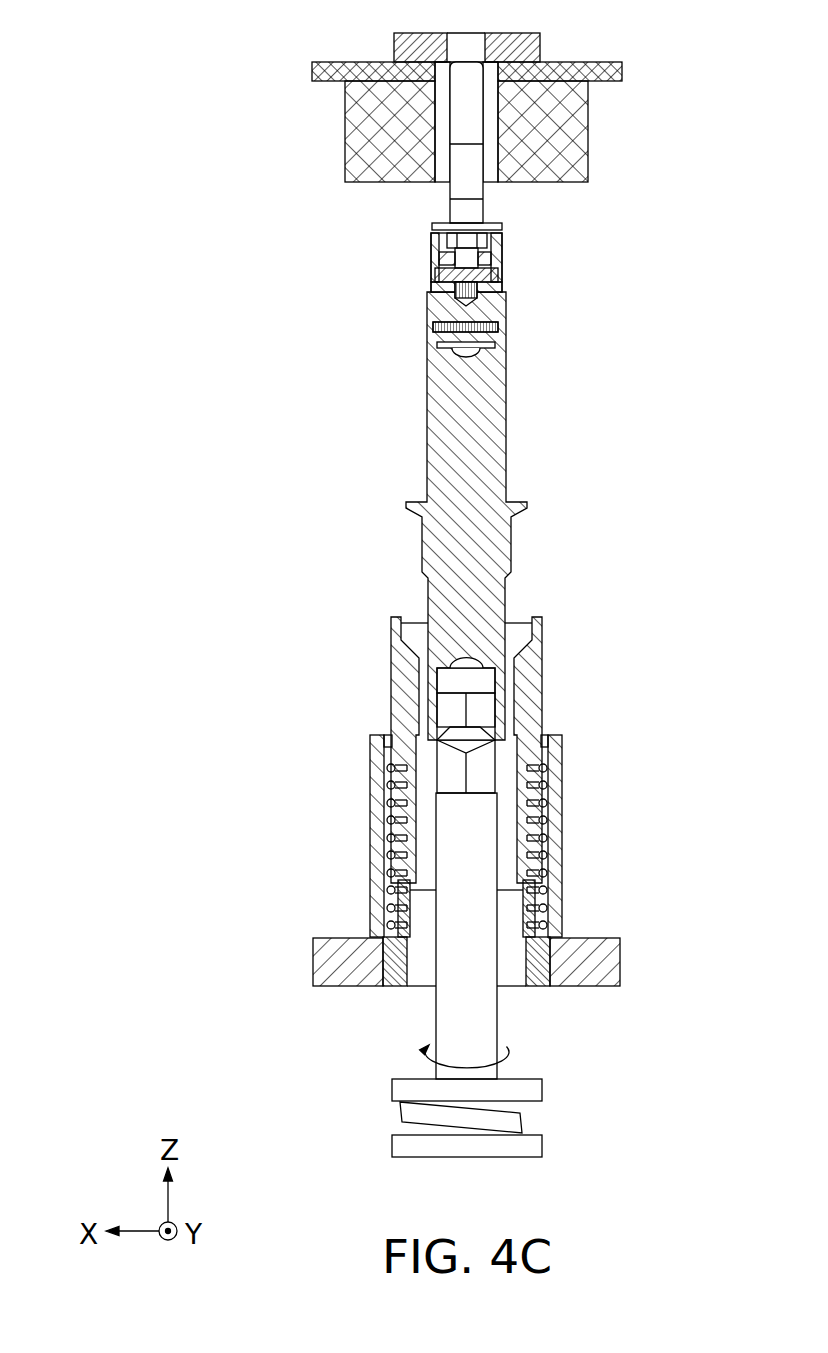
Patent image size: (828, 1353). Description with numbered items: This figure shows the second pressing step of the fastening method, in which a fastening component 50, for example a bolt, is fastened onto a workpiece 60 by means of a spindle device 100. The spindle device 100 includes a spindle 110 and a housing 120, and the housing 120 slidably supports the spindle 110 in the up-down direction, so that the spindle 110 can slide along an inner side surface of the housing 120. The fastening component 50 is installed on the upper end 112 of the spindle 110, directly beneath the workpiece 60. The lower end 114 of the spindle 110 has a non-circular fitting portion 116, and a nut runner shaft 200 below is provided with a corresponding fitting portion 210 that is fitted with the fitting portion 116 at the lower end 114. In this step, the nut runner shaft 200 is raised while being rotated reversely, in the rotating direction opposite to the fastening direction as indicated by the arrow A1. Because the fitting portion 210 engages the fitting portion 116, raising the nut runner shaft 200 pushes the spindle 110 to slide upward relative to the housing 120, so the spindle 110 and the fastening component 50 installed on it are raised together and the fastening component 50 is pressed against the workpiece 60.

The workpiece 60 is at (333, 67).
The fastening component 50 is at (462, 117).
The upper end 112 is at (430, 250).
The spindle device 100 is at (419, 690).
The spindle 110 is at (452, 460).
The housing 120 is at (393, 673).
The lower end 114 is at (437, 717).
The fitting portion 116 is at (480, 710).
The fitting portion 210 is at (437, 785).
The nut runner shaft 200 is at (460, 862).
The arrow A1 is at (508, 1048).